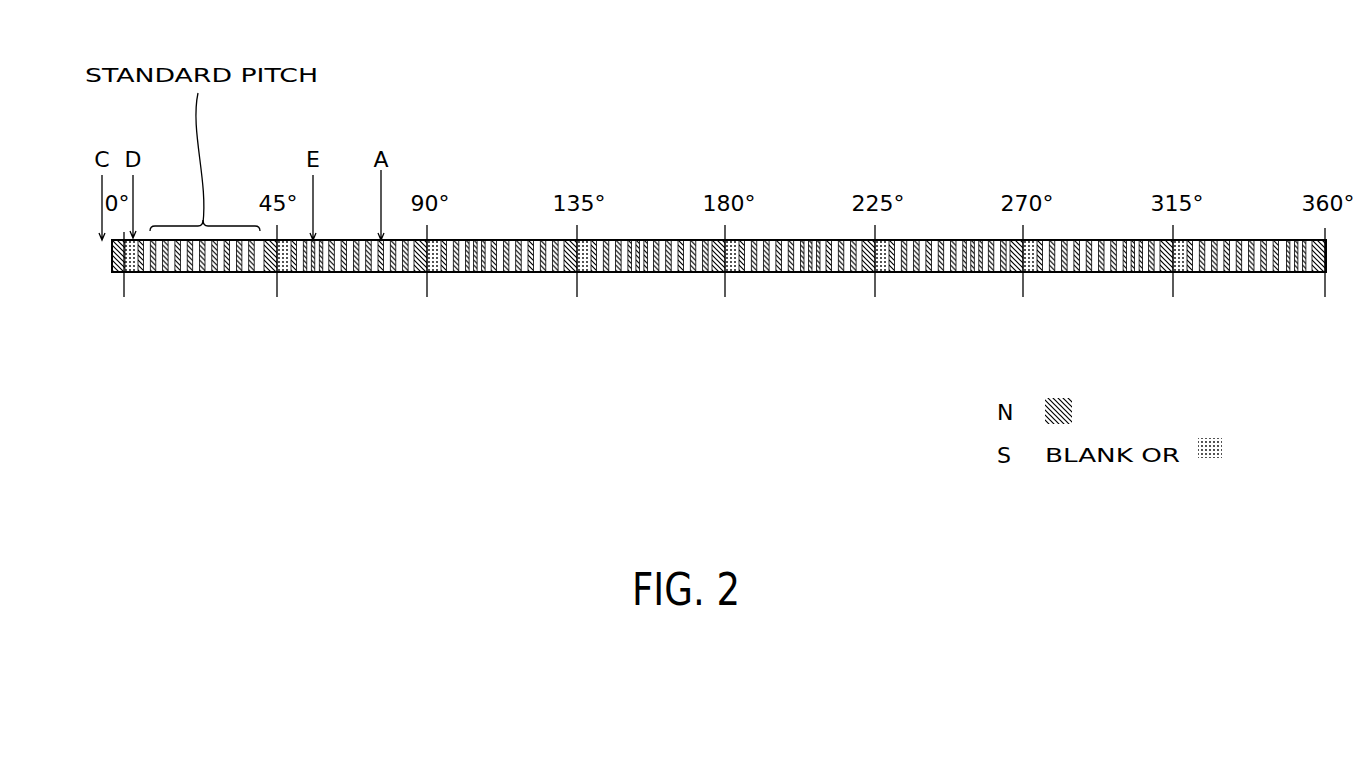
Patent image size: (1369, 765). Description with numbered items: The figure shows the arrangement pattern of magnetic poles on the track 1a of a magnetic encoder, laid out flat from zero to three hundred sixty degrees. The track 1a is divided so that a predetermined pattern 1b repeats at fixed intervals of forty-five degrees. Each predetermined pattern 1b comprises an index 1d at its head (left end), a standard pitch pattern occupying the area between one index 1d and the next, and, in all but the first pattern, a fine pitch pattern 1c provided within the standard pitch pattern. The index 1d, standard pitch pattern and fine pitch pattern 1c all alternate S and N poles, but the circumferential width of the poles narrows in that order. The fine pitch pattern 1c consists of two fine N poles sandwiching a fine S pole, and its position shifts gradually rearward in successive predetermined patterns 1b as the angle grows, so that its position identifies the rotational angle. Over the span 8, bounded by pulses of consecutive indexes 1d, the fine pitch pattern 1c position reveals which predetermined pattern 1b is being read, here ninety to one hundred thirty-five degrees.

The track 1a is at (688, 256).
The predetermined pattern 1b is at (132, 323).
The fine pitch pattern 1c is at (301, 277).
The index 1d is at (110, 294).
The section of the magnetic scale 8 is at (570, 225).